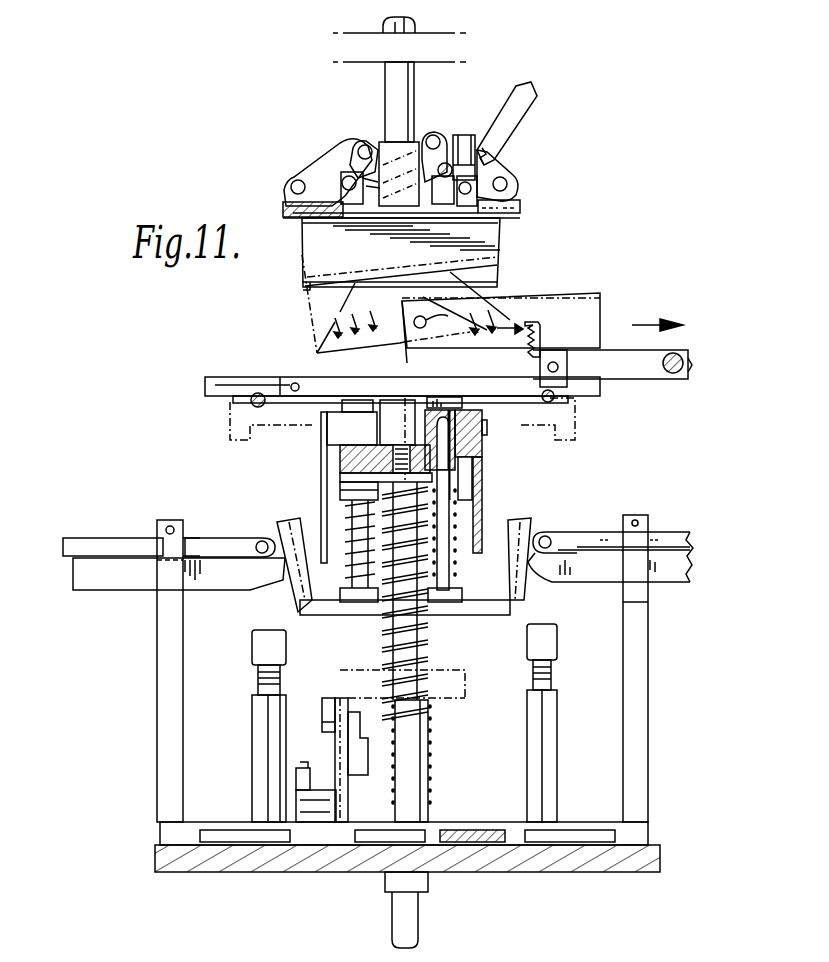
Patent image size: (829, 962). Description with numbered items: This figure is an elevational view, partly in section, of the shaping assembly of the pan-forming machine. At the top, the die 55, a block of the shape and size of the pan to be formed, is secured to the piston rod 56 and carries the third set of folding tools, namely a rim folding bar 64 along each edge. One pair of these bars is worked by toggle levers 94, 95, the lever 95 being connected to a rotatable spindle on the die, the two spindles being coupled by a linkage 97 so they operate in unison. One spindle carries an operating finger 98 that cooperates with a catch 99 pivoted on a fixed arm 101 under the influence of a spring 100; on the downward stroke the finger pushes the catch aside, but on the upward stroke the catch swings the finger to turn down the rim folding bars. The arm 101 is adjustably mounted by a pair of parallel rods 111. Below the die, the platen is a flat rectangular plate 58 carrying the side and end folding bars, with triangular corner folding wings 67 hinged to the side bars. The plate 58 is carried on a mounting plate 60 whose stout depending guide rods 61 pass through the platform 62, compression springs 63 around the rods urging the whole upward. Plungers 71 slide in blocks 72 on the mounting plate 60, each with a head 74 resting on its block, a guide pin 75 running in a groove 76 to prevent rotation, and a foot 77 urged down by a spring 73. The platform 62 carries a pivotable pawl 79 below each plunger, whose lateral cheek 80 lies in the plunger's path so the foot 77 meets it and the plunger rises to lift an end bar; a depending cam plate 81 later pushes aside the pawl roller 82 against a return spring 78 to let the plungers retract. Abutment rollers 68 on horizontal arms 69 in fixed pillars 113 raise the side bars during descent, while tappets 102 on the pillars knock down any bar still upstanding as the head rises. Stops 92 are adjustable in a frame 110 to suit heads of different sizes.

The piston rod 56 is at (385, 100).
The toggle lever 94 is at (332, 168).
The toggle lever 95 is at (360, 146).
The linkage 97 is at (432, 135).
The operating finger 98 is at (500, 108).
The rim folding bar 64 is at (287, 210).
The die 55 is at (305, 260).
The spring 100 is at (545, 298).
The catch 99 is at (526, 338).
The arm 101 is at (654, 368).
The parallel rods 111 is at (682, 378).
The plate 58 is at (314, 377).
The corner folding wing 67 is at (238, 380).
The head 74 is at (445, 397).
The block 72 is at (340, 432).
The guide pin 75 is at (425, 426).
The groove 76 is at (486, 452).
The cam plate 81 is at (486, 488).
The plunger 71 is at (450, 516).
The mounting plate 60 is at (352, 456).
The guide rod 61 is at (395, 624).
The spring 73 is at (348, 576).
The foot 77 is at (448, 605).
The pillar 113 is at (640, 690).
The horizontal arm 69 is at (134, 540).
The abutment roller 68 is at (268, 538).
The tappet 102 is at (210, 578).
The stop 92 is at (256, 728).
The roller 82 is at (326, 698).
The pawl 79 is at (337, 752).
The cheek 80 is at (362, 740).
The return spring 78 is at (300, 778).
The compression spring 63 is at (432, 775).
The frame 110 is at (583, 842).
The platform 62 is at (244, 860).